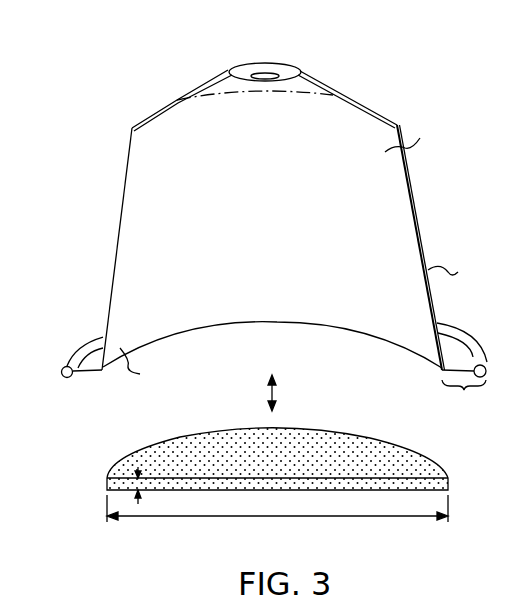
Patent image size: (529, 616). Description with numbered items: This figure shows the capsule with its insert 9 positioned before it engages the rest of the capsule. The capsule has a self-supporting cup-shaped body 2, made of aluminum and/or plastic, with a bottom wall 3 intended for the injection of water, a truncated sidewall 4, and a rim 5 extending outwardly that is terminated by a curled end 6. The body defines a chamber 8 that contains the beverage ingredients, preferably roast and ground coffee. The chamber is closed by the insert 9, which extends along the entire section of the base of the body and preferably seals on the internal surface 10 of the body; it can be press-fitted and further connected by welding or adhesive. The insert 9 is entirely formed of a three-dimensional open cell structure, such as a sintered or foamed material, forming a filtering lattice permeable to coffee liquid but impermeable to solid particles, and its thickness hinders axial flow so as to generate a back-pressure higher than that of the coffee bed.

The cup-shaped body 2 is at (440, 186).
The bottom wall 3 is at (348, 90).
The truncated sidewall 4 is at (449, 269).
The rim 5 is at (464, 396).
The curled end 6 is at (470, 338).
The chamber 8 is at (408, 135).
The insert 9 is at (468, 462).
The internal surface 10 is at (142, 369).